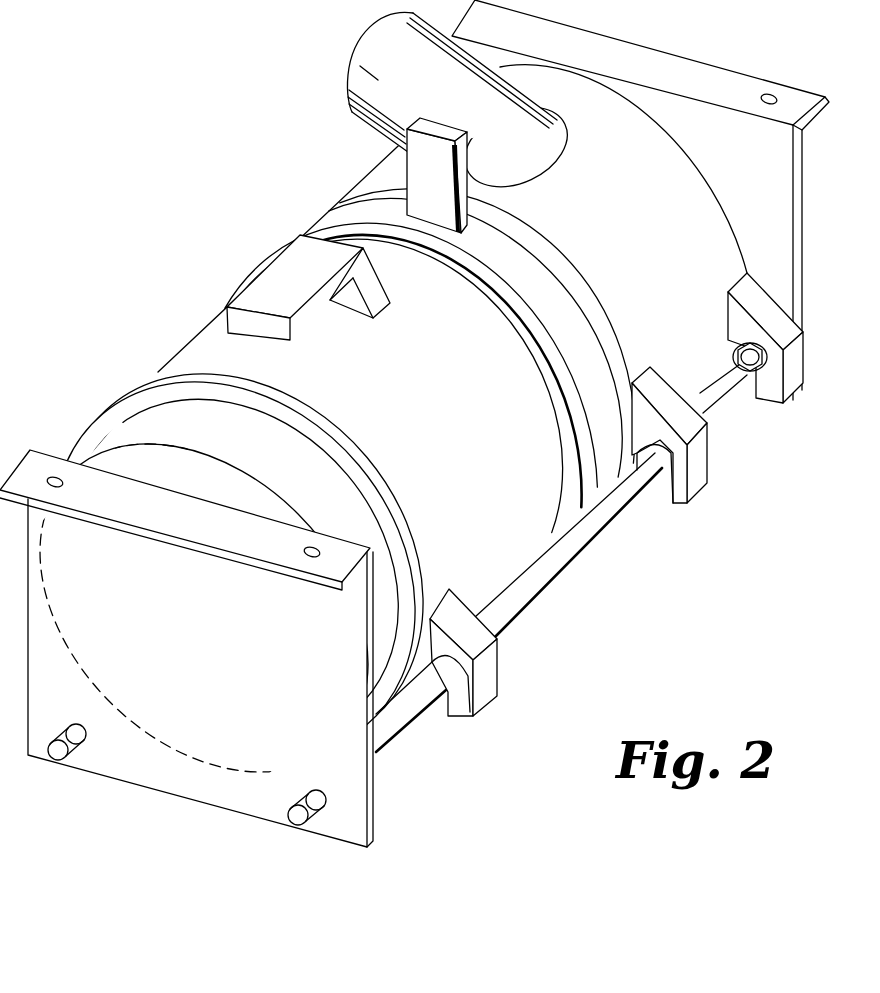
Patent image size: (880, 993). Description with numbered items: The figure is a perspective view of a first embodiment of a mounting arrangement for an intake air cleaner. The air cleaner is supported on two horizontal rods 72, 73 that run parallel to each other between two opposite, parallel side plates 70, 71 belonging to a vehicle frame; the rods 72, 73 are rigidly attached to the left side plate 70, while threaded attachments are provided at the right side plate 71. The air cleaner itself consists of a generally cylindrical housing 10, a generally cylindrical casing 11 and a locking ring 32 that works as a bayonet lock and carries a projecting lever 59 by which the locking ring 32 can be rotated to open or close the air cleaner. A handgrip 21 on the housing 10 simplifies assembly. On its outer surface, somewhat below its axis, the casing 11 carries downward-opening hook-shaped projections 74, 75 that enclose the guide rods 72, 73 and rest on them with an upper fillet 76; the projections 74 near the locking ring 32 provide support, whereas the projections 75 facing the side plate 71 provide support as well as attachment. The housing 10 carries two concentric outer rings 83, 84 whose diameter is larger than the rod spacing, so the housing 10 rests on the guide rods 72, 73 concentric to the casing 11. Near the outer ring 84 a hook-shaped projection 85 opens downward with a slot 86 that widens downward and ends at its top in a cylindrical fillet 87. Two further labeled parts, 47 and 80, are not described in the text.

The housing 10 is at (208, 340).
The casing 11 is at (392, 168).
The handgrip 21 is at (280, 277).
The locking ring 32 is at (353, 212).
The outlet duct 47 is at (397, 48).
The projecting lever 59 is at (440, 170).
The side plate 70 is at (252, 797).
The side plate 71 is at (757, 159).
The guide rod 72 is at (397, 722).
The guide rod 73 is at (62, 760).
The hook-shaped projections 74 is at (698, 470).
The hook-shaped projections 75 is at (797, 365).
The upper fillet 76 is at (673, 490).
The nut 80 is at (768, 388).
The outer ring 83 is at (300, 230).
The outer ring 84 is at (158, 379).
The hook-shaped projection 85 is at (487, 665).
The slot 86 is at (447, 705).
The cylindrical fillet 87 is at (493, 692).